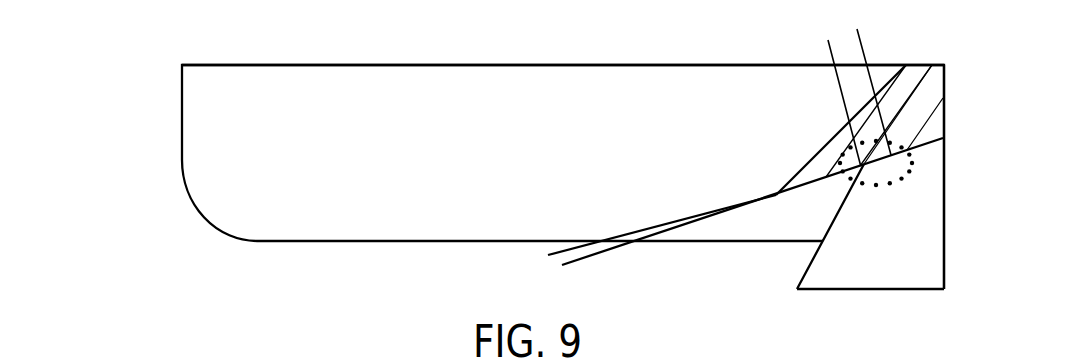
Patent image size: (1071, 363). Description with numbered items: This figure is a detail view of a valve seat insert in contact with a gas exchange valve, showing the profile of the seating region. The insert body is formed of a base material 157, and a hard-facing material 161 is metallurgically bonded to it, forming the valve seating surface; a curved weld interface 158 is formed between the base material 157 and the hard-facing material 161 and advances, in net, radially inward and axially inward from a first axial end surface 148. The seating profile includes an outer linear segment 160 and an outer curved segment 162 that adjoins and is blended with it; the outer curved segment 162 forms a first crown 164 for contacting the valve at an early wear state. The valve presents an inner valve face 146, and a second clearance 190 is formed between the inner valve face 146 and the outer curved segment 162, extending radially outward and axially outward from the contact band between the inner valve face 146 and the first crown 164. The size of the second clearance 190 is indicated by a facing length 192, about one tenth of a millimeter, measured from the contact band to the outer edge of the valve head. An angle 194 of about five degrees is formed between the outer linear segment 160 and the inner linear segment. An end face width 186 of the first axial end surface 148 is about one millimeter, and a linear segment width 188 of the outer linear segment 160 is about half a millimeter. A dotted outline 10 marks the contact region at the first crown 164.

The first axial end surface 148 is at (322, 242).
The base material 157 is at (663, 78).
The inner valve face 146 is at (943, 138).
The outer linear segment 160 is at (698, 222).
The curved weld interface 158 is at (806, 180).
The outer curved segment 162 is at (812, 178).
The hard-facing material 161 is at (920, 75).
The first crown 164 is at (887, 168).
The light spot 10 is at (913, 164).
The facing length 192 is at (798, 57).
The second clearance 190 is at (878, 160).
The end face width 186 is at (610, 240).
The linear segment width 188 is at (773, 190).
The angle 194 is at (545, 225).